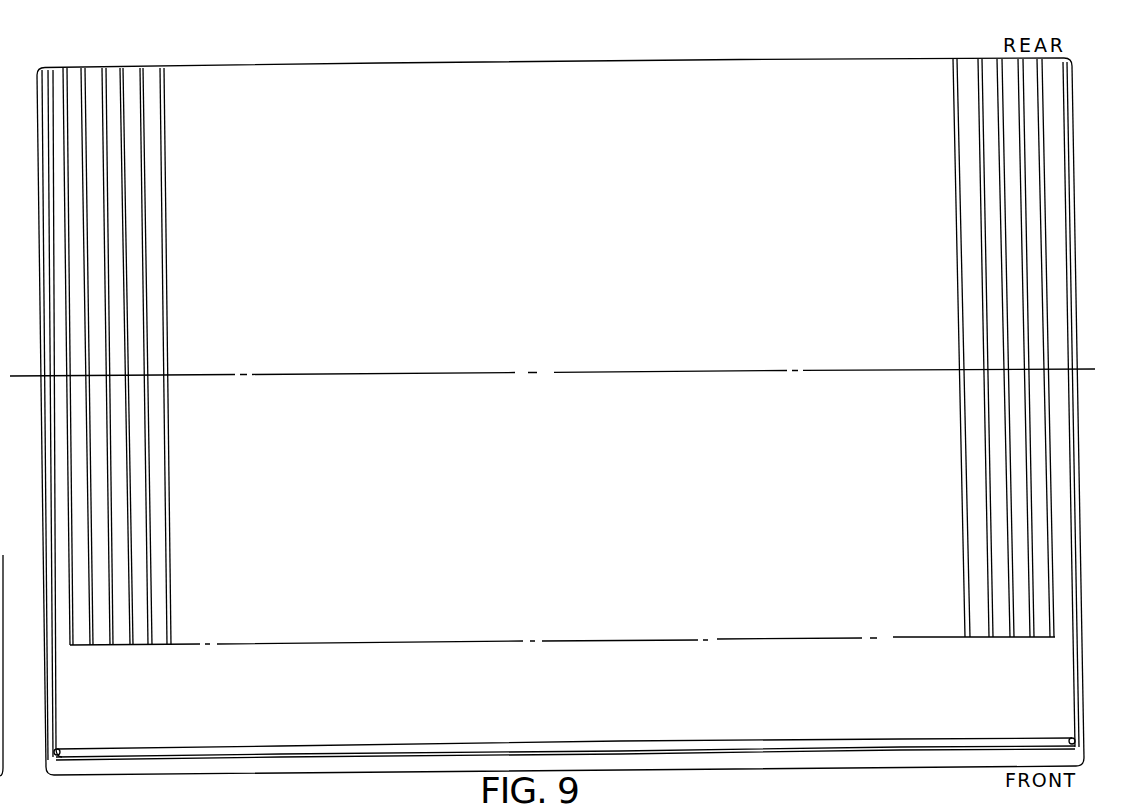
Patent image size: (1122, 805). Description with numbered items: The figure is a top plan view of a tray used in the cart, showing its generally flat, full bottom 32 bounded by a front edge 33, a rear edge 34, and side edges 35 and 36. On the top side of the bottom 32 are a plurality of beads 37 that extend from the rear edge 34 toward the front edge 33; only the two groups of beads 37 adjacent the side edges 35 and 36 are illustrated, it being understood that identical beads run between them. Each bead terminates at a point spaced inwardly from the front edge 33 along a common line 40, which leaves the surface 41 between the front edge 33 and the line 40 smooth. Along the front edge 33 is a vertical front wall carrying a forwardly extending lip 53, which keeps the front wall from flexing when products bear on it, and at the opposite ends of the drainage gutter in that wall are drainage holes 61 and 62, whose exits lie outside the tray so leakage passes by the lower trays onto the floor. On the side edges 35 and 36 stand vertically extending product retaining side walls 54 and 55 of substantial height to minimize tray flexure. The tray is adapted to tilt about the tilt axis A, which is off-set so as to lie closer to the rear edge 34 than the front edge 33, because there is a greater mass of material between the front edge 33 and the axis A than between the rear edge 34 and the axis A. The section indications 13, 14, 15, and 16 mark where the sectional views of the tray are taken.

The section line 13- 13 is at (202, 804).
The section line 14- 14 is at (214, 453).
The section line 15- 15 is at (198, 130).
The section line 16- 16 is at (100, 152).
The bottom 32 is at (540, 578).
The front edge 33 is at (325, 748).
The rear edge 34 is at (705, 62).
The side edge 35 is at (56, 697).
The side edge 36 is at (1075, 679).
The beads 37 is at (173, 568).
The common line 40 is at (503, 643).
The surface 41 is at (518, 718).
The lip 53 is at (44, 680).
The side wall 54 is at (44, 692).
The side wall 55 is at (1085, 716).
The drainage hole 61 is at (61, 747).
The drainage hole 62 is at (1070, 738).
The tilt axis A is at (600, 370).